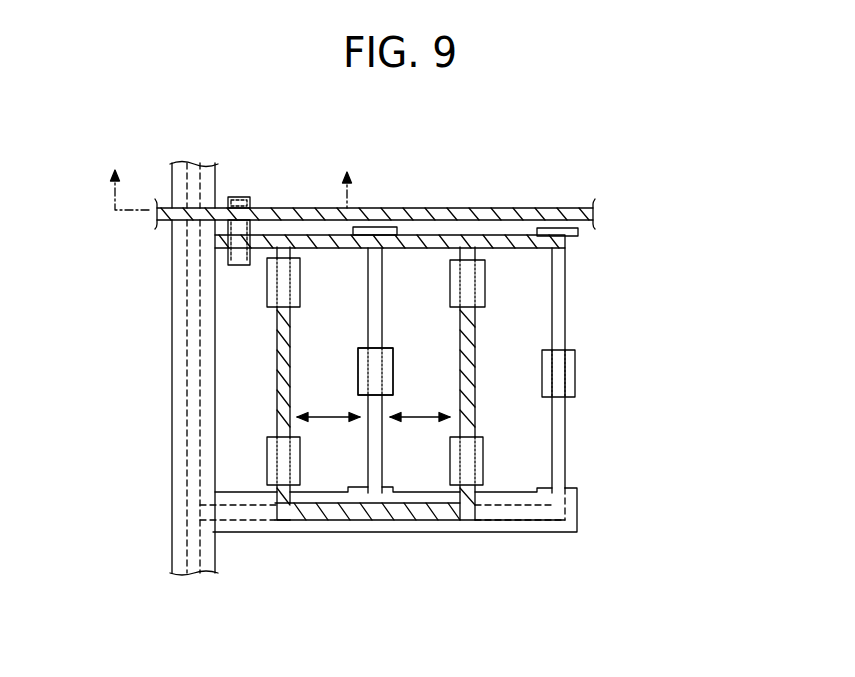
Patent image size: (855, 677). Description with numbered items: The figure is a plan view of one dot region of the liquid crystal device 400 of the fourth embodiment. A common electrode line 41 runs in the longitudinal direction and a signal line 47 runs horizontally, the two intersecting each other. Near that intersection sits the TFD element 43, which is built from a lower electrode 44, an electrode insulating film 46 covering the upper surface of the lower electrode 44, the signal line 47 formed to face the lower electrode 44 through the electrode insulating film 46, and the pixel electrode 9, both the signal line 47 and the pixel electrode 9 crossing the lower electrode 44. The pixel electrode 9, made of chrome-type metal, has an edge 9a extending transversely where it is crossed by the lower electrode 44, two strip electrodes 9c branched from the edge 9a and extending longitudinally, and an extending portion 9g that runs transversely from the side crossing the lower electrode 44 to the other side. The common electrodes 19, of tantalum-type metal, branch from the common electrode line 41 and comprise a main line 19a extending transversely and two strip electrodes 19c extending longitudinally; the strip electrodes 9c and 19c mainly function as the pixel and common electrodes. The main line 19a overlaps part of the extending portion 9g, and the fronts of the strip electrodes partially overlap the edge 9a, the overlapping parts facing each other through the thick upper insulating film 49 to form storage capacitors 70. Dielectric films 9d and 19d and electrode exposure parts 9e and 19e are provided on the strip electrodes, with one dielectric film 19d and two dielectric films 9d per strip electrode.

The liquid crystal device 400 is at (572, 142).
The common electrode line 41 is at (131, 369).
The upper insulating film 49 is at (165, 370).
The signal line 47 is at (432, 210).
The lower electrode 44 is at (258, 163).
The electrode insulating film 46 is at (236, 190).
The TFD element 43 is at (260, 192).
The storage capacitor 70 is at (433, 383).
The pixel electrode 9 is at (429, 390).
The edge 9a is at (508, 240).
The strip electrode 9c is at (429, 379).
The dielectric film 9d is at (485, 280).
The electrode exposure part 9e is at (395, 370).
The extending portion 9g is at (418, 515).
The common electrode 19 is at (456, 449).
The main line 19a is at (290, 550).
The strip electrode 19c is at (345, 487).
The dielectric film 19d is at (387, 370).
The electrode exposure part 19e is at (368, 318).